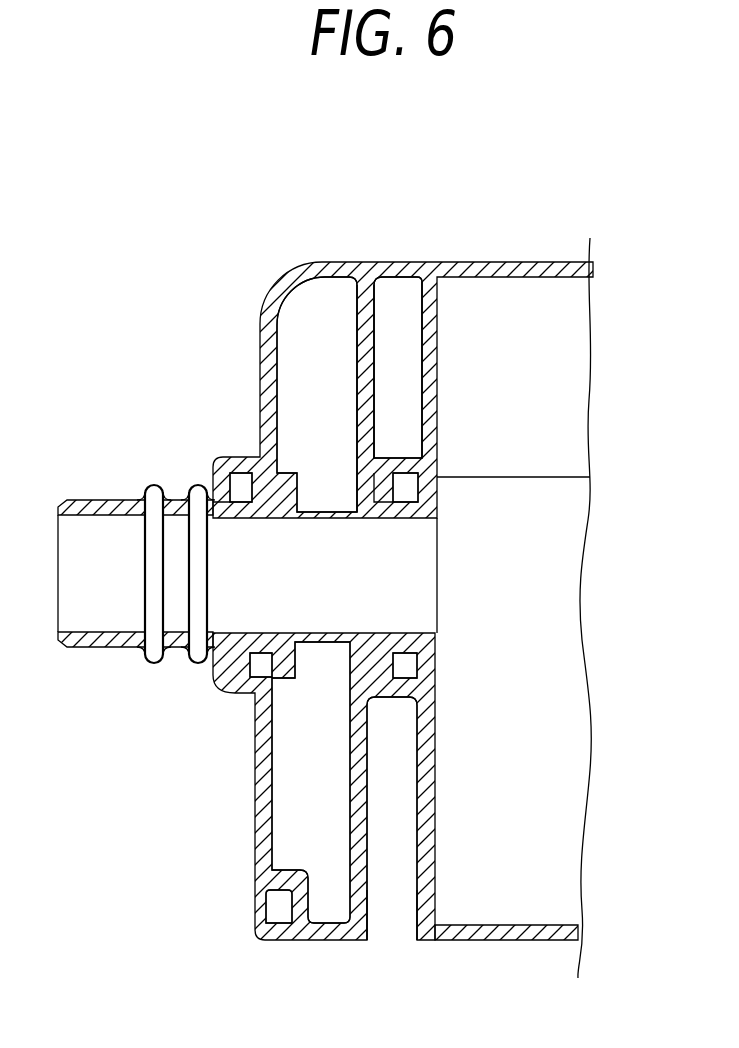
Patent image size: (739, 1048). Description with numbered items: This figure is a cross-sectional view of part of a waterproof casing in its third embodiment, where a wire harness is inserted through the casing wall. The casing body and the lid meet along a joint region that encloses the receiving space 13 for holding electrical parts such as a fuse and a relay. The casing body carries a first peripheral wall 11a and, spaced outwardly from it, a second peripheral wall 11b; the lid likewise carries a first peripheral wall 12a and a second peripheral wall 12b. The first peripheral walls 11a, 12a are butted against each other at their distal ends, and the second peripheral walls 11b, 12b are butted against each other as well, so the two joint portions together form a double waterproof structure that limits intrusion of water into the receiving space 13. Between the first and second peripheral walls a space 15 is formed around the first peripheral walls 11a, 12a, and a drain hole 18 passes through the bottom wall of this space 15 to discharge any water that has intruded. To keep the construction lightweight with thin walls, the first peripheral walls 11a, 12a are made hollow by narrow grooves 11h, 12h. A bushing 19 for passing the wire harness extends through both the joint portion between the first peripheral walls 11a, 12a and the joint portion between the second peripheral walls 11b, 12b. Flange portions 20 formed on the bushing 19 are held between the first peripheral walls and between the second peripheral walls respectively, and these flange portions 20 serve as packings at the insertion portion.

The first peripheral wall 11a is at (415, 887).
The second peripheral wall 11b is at (258, 842).
The narrow groove 11h is at (407, 783).
The first peripheral wall 12a is at (440, 385).
The second peripheral wall 12b is at (258, 397).
The narrow groove 12h is at (402, 293).
The receiving space 13 is at (553, 607).
The space 15 is at (288, 357).
The drain hole 18 is at (282, 907).
The bushing 19 is at (93, 643).
The flange portion 20 is at (365, 480).